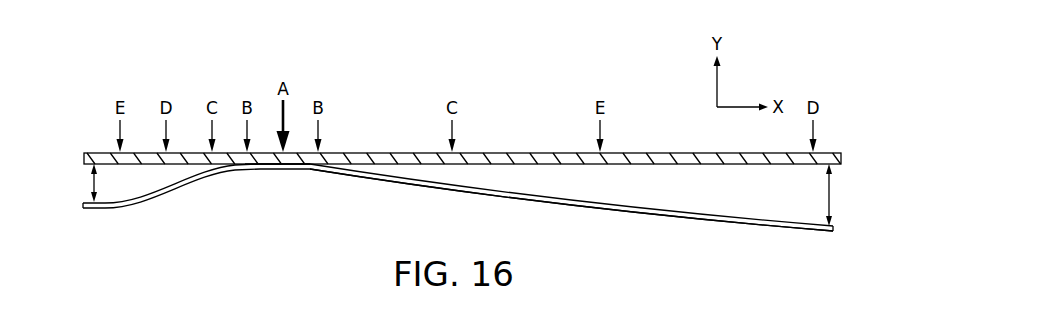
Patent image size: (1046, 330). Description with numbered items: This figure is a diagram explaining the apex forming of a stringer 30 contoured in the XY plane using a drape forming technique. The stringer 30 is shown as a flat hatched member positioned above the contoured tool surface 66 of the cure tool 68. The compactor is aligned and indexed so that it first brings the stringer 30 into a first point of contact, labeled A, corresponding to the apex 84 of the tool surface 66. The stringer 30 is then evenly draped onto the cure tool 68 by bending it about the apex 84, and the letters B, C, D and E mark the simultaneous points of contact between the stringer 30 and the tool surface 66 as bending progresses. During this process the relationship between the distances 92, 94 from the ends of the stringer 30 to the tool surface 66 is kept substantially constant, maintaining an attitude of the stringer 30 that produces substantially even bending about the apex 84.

The stringer 30 is at (643, 158).
The tool surface 66 is at (713, 212).
The cure tool 68 is at (571, 204).
The apex 84 is at (270, 189).
The distance 92 is at (92, 178).
The distance 94 is at (832, 195).